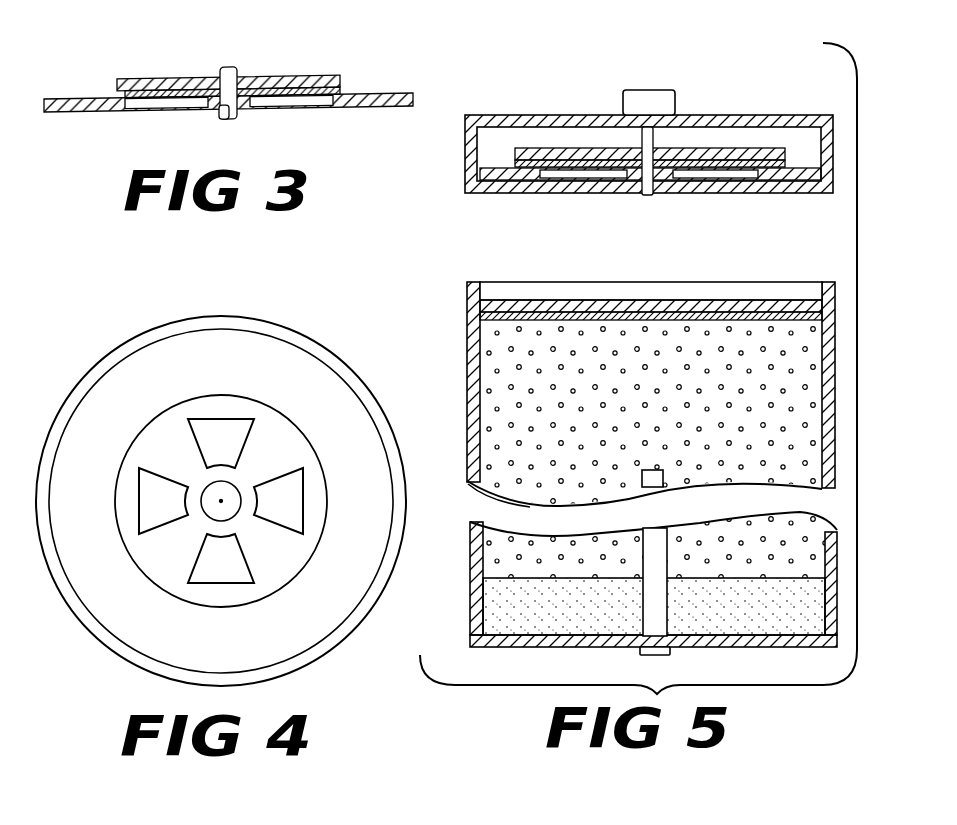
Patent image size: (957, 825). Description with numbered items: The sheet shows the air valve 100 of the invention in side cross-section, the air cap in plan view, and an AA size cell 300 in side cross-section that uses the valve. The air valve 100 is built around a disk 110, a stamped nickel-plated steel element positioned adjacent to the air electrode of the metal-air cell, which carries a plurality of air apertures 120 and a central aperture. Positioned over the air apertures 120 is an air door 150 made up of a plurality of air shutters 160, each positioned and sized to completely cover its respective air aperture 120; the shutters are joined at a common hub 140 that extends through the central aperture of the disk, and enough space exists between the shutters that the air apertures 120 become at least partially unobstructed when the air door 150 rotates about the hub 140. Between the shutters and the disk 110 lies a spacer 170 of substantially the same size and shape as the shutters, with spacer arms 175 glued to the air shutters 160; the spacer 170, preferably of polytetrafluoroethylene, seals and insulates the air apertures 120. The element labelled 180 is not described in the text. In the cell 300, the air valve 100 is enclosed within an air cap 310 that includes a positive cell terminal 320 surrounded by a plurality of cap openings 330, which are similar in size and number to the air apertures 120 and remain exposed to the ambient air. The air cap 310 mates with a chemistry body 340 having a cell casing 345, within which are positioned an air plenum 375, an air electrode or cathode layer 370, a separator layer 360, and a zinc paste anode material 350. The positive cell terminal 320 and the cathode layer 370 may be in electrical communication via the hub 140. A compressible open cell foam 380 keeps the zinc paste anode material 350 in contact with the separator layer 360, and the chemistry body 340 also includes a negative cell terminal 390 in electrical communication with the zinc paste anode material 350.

In FIG. 3, the air valve 100 is at (105, 57).
In FIG. 5, the air valve 100 is at (779, 140).
In FIG. 3, the disk 110 is at (88, 112).
In FIG. 5, the disk 110 is at (480, 172).
In FIG. 3, the air apertures 120 is at (147, 104).
In FIG. 5, the air apertures 120 is at (586, 177).
In FIG. 3, the hub 140 is at (222, 114).
In FIG. 5, the hub 140 is at (646, 178).
In FIG. 3, the air door 150 is at (342, 66).
In FIG. 3, the air shutters 160 is at (213, 82).
In FIG. 5, the air shutters 160 is at (587, 148).
In FIG. 3, the spacer 170 is at (230, 72).
In FIG. 5, the spacer 170 is at (651, 196).
In FIG. 3, the spacer arms 175 is at (173, 94).
In FIG. 5, the spacer arms 175 is at (515, 164).
In FIG. 3, the edge contact 180 is at (119, 97).
In FIG. 5, the edge contact 180 is at (551, 168).
In FIG. 5, the AA cell 300 is at (450, 71).
In FIG. 4, the air cap 310 is at (148, 330).
In FIG. 5, the air cap 310 is at (839, 129).
In FIG. 4, the positive cell terminal 320 is at (227, 490).
In FIG. 4, the cap openings 330 is at (213, 425).
In FIG. 5, the chemistry body 340 is at (461, 319).
In FIG. 5, the cell casing 345 is at (468, 411).
In FIG. 5, the zinc paste anode material 350 is at (508, 370).
In FIG. 5, the separator layer 360 is at (640, 318).
In FIG. 5, the cathode layer 370 is at (577, 303).
In FIG. 5, the air plenum 375 is at (505, 288).
In FIG. 5, the compressible open cell foam 380 is at (505, 618).
In FIG. 5, the negative cell terminal 390 is at (655, 657).